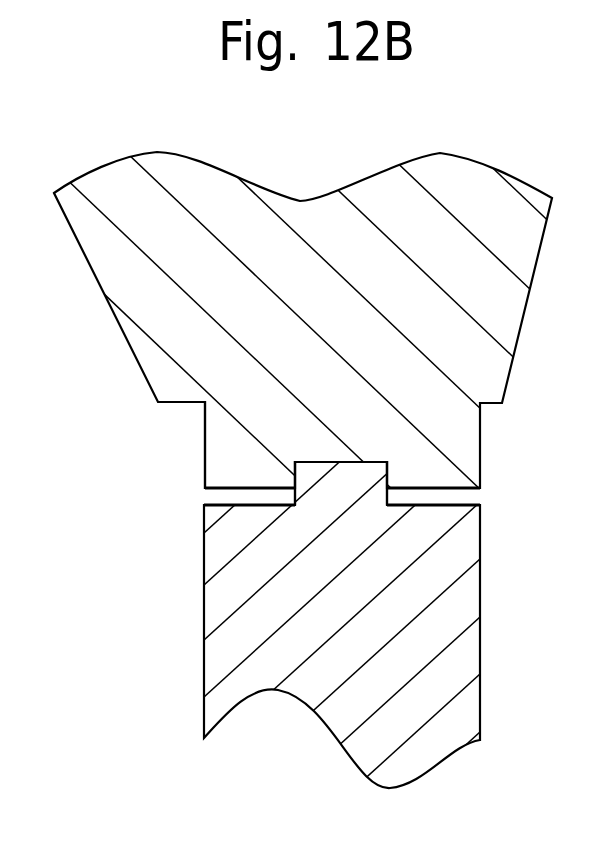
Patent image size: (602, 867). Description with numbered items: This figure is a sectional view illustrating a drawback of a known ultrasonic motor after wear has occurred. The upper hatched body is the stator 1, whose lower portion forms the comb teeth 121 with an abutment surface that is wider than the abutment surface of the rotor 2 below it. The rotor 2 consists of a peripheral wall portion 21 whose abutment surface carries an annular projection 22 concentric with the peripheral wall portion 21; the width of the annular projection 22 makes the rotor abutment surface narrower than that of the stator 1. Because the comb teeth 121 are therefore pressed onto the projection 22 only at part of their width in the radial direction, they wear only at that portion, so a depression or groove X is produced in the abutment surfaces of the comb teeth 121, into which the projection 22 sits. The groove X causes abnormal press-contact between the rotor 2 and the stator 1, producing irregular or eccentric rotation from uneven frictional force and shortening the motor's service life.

The stator 1 is at (539, 251).
The comb teeth 121 is at (218, 453).
The depression or groove X is at (380, 454).
The rotor 2 is at (301, 627).
The peripheral wall portion 21 is at (463, 672).
The annular projection 22 is at (347, 486).